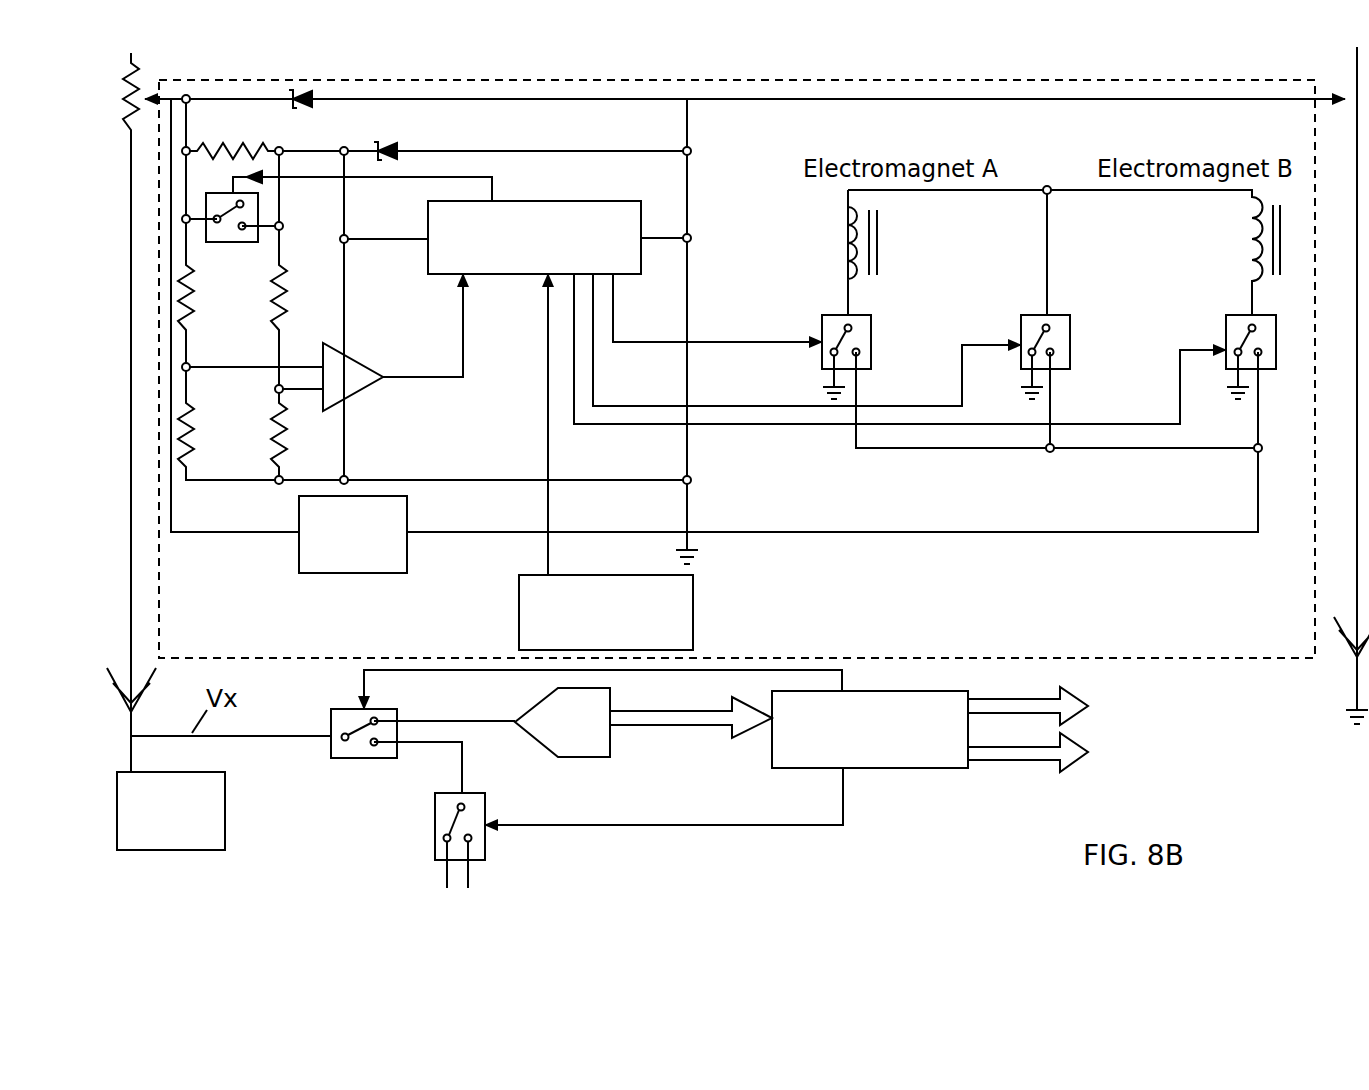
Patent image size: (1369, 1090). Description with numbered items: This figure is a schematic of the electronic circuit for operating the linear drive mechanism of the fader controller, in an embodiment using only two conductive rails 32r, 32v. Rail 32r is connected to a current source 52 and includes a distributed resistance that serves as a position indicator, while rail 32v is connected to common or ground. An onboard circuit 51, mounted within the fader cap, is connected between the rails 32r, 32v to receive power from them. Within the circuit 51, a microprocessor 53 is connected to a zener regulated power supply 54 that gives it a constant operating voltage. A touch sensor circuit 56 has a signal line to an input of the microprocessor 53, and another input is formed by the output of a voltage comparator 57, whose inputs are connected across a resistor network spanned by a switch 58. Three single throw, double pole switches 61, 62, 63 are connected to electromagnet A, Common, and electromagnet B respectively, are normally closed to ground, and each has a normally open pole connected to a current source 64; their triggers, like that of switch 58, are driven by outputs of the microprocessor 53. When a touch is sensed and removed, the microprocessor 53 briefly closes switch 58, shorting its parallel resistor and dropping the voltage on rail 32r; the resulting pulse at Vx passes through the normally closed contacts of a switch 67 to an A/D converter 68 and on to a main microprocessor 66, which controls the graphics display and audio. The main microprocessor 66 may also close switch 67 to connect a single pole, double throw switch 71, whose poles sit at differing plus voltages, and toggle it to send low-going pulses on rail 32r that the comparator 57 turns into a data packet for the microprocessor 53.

The conductive rail 32r is at (137, 630).
The conductive rail 32v is at (1345, 598).
The onboard circuit 51 is at (1078, 82).
The zener regulated power supply 54 is at (472, 130).
The switch 58 is at (230, 246).
The voltage comparator 57 is at (363, 392).
The microprocessor 53 is at (496, 275).
The single throw, double pole switch 61 is at (872, 337).
The single throw, double pole switch 62 is at (1071, 318).
The single throw, double pole switch 63 is at (1237, 315).
The current source 64 is at (299, 553).
The touch sensor circuit 56 is at (693, 620).
The current source 52 is at (225, 833).
The switch 67 is at (365, 762).
The single pole, double throw switch 71 is at (433, 820).
The A/D converter 68 is at (610, 757).
The main microprocessor 66 is at (956, 768).